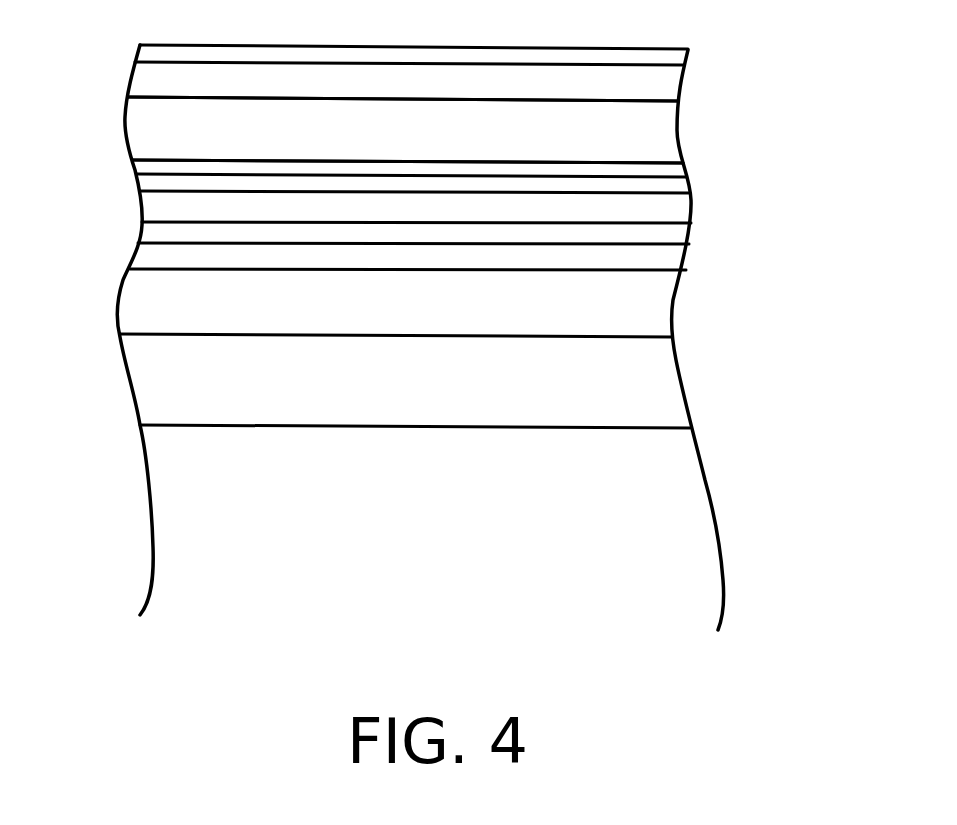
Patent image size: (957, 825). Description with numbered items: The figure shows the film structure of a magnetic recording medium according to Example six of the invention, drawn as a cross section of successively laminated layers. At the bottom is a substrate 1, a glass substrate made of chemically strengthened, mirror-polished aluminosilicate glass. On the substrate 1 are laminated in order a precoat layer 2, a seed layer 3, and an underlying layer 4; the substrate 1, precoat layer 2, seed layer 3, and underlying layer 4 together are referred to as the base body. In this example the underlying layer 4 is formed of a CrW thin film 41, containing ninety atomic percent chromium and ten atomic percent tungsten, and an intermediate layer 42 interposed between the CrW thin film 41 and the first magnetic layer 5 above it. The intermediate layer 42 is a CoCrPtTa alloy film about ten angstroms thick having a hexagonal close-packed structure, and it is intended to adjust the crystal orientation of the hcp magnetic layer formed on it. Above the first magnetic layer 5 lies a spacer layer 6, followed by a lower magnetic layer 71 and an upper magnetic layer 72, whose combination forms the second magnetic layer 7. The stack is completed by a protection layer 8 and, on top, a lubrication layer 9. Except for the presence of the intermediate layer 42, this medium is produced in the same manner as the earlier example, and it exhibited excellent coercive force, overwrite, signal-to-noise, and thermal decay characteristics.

The substrate 1 is at (675, 485).
The precoat layer 2 is at (667, 383).
The seed layer 3 is at (662, 302).
The underlying layer 4 is at (692, 210).
The CrW thin film 41 is at (145, 257).
The intermediate layer 42 is at (150, 230).
The first magnetic layer 5 is at (697, 222).
The spacer layer 6 is at (687, 188).
The second magnetic layer 7 is at (810, 115).
The lower magnetic layer 71 is at (677, 168).
The upper magnetic layer 72 is at (663, 130).
The protection layer 8 is at (663, 83).
The lubrication layer 9 is at (668, 52).